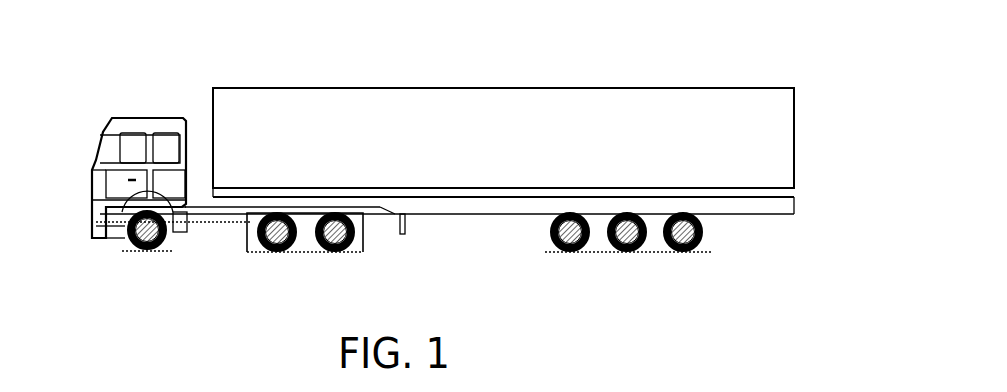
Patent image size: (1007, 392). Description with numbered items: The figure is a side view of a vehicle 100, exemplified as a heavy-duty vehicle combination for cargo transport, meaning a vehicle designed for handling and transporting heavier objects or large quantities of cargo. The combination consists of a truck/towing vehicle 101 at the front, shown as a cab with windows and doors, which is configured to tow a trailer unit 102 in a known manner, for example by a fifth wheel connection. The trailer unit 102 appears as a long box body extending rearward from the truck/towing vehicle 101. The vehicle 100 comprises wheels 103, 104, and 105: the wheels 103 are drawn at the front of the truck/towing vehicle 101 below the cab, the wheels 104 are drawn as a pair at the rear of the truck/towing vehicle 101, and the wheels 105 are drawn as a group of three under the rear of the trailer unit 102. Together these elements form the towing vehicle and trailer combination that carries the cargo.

The vehicle 100 is at (176, 62).
The truck/towing vehicle 101 is at (107, 116).
The trailer unit 102 is at (519, 79).
The wheels 103 is at (124, 257).
The wheels 104 is at (266, 258).
The wheels 105 is at (552, 258).